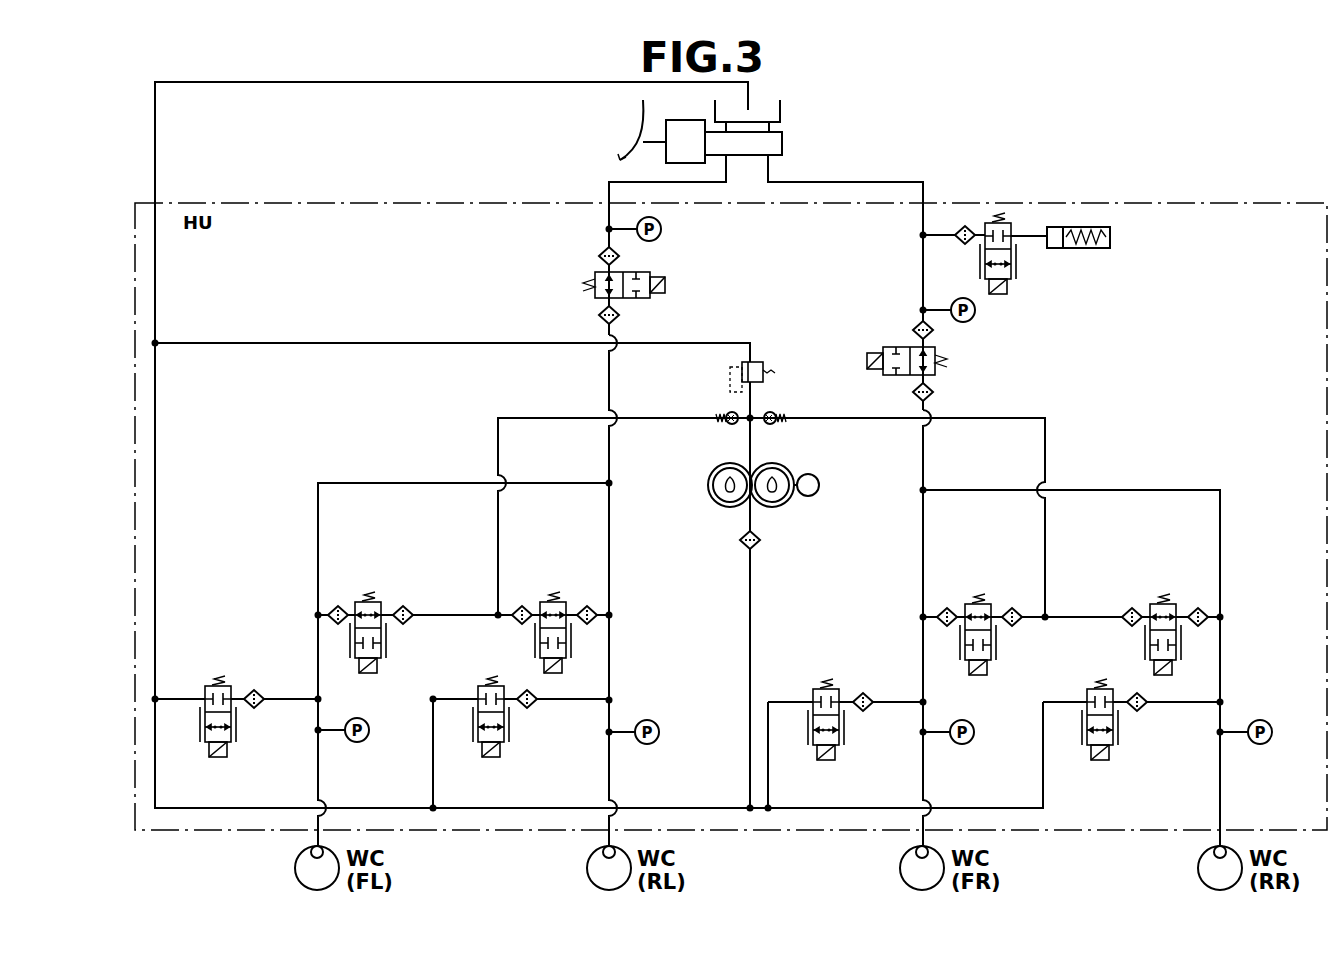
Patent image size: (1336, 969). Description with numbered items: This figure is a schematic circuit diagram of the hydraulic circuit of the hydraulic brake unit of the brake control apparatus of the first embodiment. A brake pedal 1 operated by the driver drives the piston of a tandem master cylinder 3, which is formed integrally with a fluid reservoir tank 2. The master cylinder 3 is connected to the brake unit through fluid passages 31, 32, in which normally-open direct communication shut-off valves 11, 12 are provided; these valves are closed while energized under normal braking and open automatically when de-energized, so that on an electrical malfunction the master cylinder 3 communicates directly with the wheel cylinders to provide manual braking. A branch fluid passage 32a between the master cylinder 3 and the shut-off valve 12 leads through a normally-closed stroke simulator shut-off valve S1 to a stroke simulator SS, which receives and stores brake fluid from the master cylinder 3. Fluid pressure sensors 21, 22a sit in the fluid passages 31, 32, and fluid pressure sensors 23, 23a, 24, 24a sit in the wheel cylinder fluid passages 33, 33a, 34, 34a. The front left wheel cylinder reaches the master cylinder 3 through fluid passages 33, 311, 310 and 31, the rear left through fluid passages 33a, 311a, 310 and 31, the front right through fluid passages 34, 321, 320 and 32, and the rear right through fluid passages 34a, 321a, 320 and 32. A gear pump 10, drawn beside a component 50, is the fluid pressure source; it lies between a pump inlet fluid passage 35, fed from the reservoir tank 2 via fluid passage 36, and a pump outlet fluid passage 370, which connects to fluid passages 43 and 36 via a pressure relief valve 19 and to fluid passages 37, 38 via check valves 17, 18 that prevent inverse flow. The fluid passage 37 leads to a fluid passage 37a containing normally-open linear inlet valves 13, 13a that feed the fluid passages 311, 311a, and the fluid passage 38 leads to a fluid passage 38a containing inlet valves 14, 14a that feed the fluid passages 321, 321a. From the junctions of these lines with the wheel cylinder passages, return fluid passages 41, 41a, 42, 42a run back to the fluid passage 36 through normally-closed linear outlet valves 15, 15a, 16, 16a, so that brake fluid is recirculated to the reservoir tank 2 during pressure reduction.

The brake pedal 1 is at (612, 157).
The fluid reservoir tank 2 is at (767, 108).
The master cylinder 3 is at (782, 140).
The gear pump 10 is at (772, 510).
The direct communication shut-off valve 11 is at (645, 270).
The direct communication shut-off valve 12 is at (878, 347).
The inlet valve 13 is at (378, 598).
The inlet valve 13a is at (547, 597).
The inlet valve 14 is at (967, 600).
The inlet valve 14a is at (1172, 600).
The outlet valve 15 is at (228, 684).
The outlet valve 15a is at (478, 686).
The outlet valve 16 is at (820, 688).
The outlet valve 16a is at (1091, 688).
The check valve 17 is at (728, 412).
The check valve 18 is at (773, 428).
The pressure relief valve 19 is at (756, 361).
The fluid pressure sensor 21 is at (662, 229).
The fluid pressure sensor 22a is at (976, 311).
The fluid pressure sensor 23 is at (358, 743).
The fluid pressure sensor 23a is at (648, 720).
The fluid pressure sensor 24 is at (975, 720).
The fluid pressure sensor 24a is at (1266, 720).
The fluid passage 31 is at (609, 191).
The fluid passage 32 is at (898, 182).
The branch fluid passage 32a is at (942, 235).
The fluid passage 33 is at (313, 759).
The fluid passage 33a is at (609, 762).
The fluid passage 34 is at (918, 750).
The fluid passage 34a is at (1218, 786).
The pump inlet fluid passage 35 is at (746, 521).
The fluid passage 36 is at (155, 138).
The fluid passage 37 is at (538, 418).
The fluid passage 37a is at (453, 615).
The fluid passage 38 is at (812, 418).
The fluid passage 38a is at (1082, 617).
The fluid passage 41 is at (175, 699).
The fluid passage 41a is at (436, 770).
The fluid passage 42 is at (770, 770).
The fluid passage 42a is at (1044, 772).
The fluid passage 43 is at (318, 343).
The motor 50 is at (820, 488).
The fluid passage 310 is at (612, 455).
The fluid passage 311 is at (362, 483).
The fluid passage 311a is at (610, 588).
The fluid passage 320 is at (924, 464).
The fluid passage 321 is at (918, 576).
The fluid passage 321a is at (1187, 490).
The pump outlet fluid passage 370 is at (746, 437).
The stroke simulator shut-off valve S1 is at (1005, 223).
The stroke simulator SS is at (1082, 227).